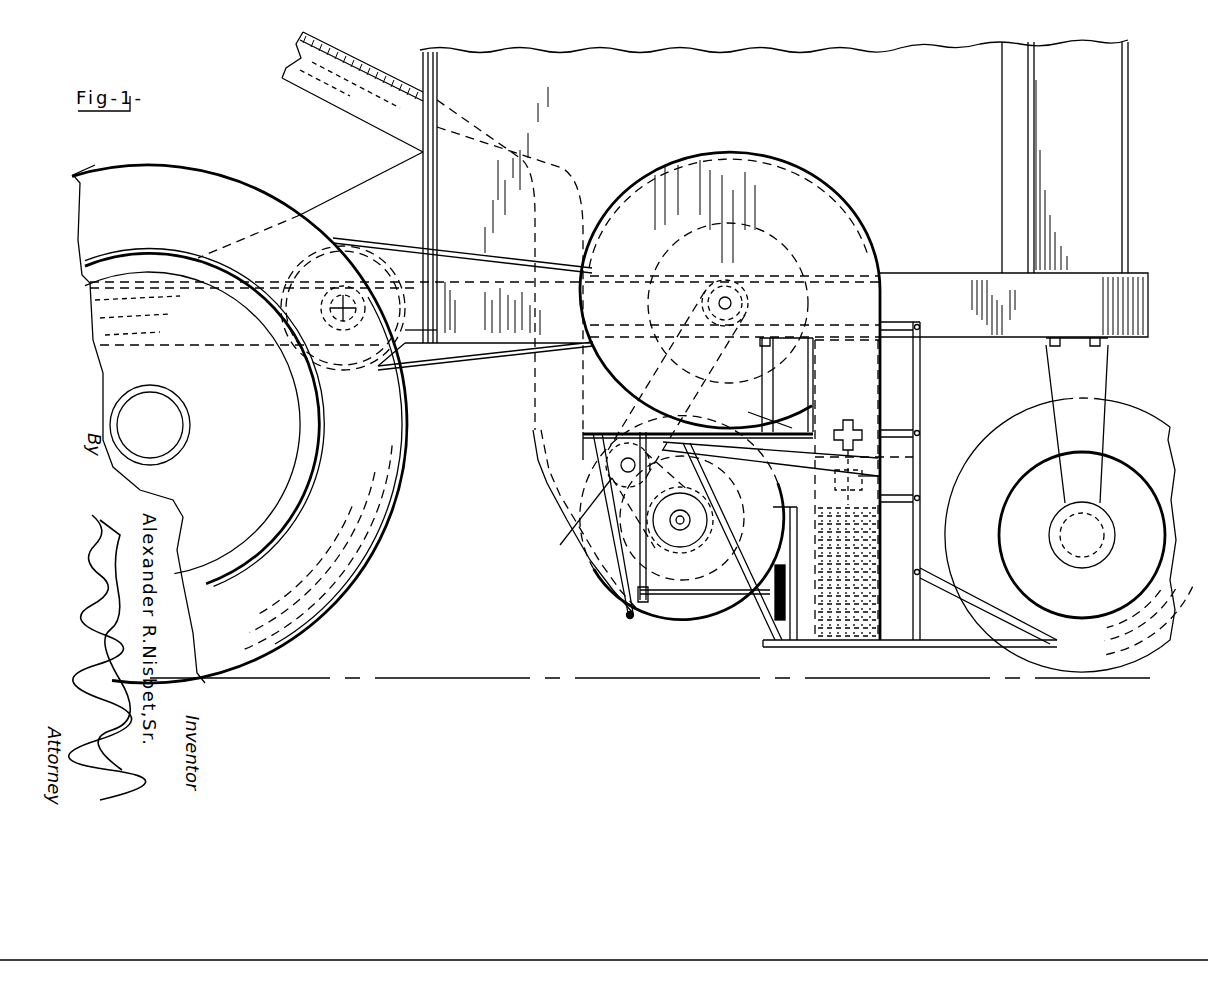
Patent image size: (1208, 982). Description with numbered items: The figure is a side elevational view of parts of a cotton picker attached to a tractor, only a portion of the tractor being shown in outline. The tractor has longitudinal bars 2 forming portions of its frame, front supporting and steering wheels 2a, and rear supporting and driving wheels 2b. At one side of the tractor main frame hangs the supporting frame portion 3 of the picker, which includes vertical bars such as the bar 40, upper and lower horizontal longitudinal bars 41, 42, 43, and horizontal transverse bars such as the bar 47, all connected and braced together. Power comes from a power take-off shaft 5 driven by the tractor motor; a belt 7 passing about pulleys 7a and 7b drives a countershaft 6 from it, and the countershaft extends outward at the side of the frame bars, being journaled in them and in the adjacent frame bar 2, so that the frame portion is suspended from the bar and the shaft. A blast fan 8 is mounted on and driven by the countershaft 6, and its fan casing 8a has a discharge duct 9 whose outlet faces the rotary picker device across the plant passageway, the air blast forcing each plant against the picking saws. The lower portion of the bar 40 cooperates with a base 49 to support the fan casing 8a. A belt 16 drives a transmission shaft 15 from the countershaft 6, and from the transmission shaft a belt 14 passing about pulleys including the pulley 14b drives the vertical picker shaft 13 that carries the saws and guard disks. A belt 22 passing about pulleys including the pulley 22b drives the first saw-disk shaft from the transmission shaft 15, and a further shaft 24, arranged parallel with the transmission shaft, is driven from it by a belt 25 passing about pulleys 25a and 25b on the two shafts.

The longitudinal bars 2 is at (1014, 189).
The front supporting and steering wheels 2a is at (1069, 505).
The rear supporting and driving wheels 2b is at (239, 424).
The supporting frame portion of the picker 3 is at (592, 380).
The power take-off shaft 5 is at (330, 308).
The countershaft 6 is at (730, 300).
The belt 7 is at (497, 355).
The pulley 7a is at (405, 332).
The pulley 7b is at (747, 308).
The blast fan 8 is at (763, 233).
The fan casing 8a is at (684, 197).
The discharge duct 9 is at (847, 490).
The vertical shaft 13 is at (878, 475).
The belt 14 is at (781, 462).
The pulley 14b is at (918, 457).
The transmission shaft 15 is at (622, 472).
The belt 16 is at (622, 411).
The belt 22 is at (613, 572).
The pulley 22b is at (629, 619).
The shaft 24 is at (682, 526).
The belt 25 is at (628, 528).
The pulley 25a is at (612, 470).
The pulley 25b is at (718, 533).
The vertical bar 40 is at (918, 402).
The horizontal longitudinal bar 41 is at (760, 412).
The horizontal longitudinal bar 42 is at (789, 432).
The horizontal longitudinal bar 43 is at (790, 528).
The horizontal transverse bar 47 is at (900, 322).
The base 49 is at (821, 646).